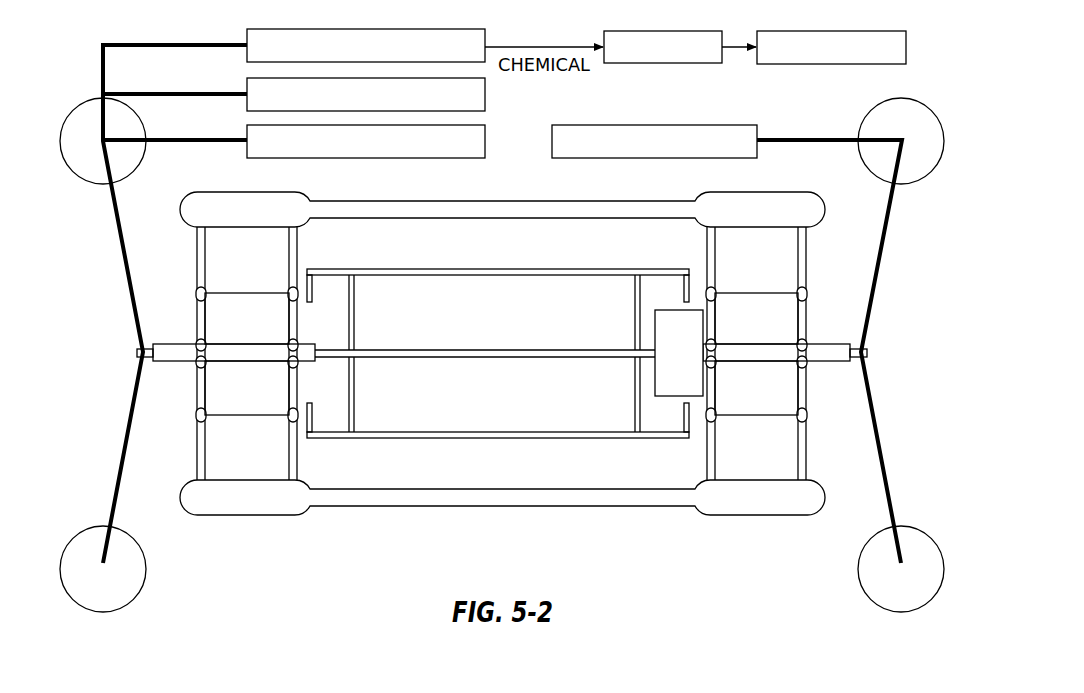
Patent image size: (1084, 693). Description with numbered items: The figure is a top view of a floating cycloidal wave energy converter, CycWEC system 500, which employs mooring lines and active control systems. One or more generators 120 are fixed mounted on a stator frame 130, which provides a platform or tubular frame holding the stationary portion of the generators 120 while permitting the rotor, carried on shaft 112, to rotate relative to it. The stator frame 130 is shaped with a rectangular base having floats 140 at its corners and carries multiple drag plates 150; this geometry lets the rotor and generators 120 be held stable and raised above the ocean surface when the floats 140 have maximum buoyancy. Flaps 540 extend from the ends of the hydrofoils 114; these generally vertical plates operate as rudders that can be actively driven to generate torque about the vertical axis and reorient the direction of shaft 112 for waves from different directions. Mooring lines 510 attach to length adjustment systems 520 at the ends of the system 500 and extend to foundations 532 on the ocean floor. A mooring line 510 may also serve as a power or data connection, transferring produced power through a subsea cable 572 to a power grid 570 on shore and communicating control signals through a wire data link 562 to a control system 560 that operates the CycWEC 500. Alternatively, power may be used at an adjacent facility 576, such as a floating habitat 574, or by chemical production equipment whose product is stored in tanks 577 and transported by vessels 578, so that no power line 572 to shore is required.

The CycWEC system 500 is at (310, 579).
The shaft 112 is at (460, 352).
The hydrofoils 114 is at (500, 272).
The generators 120 is at (664, 365).
The stator frame 130 is at (520, 488).
The floats 140 is at (231, 220).
The drag plates 150 is at (231, 331).
The mooring lines 510 is at (123, 258).
The length adjustment systems 520 is at (143, 349).
The foundations 532 is at (70, 168).
The flaps 540 is at (312, 292).
The control system 560 is at (718, 152).
The wire data link 562 is at (782, 140).
The power grid 570 is at (445, 152).
The subsea cable 572 is at (177, 142).
The floating habitat 574 is at (470, 106).
The facility 576 is at (470, 58).
The tanks 577 is at (710, 60).
The vessels 578 is at (885, 60).